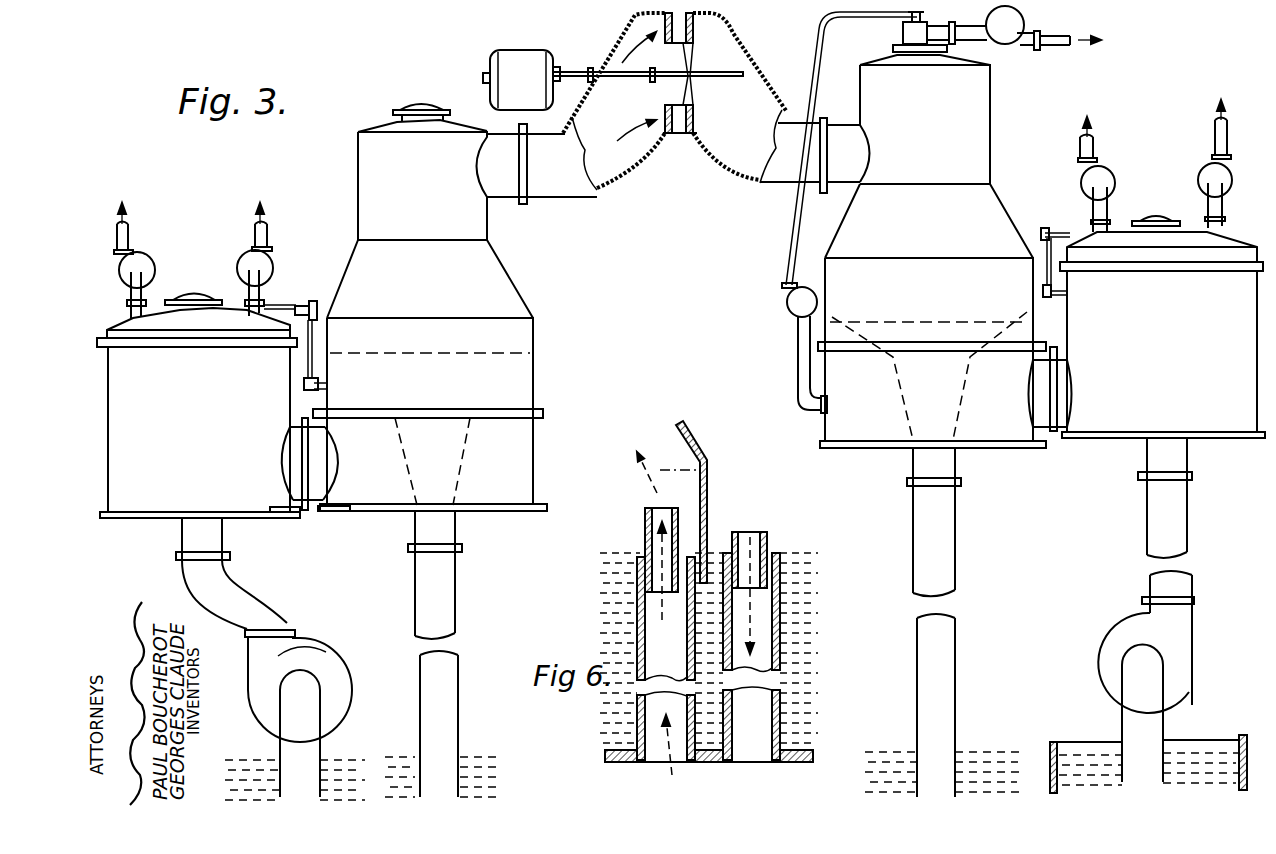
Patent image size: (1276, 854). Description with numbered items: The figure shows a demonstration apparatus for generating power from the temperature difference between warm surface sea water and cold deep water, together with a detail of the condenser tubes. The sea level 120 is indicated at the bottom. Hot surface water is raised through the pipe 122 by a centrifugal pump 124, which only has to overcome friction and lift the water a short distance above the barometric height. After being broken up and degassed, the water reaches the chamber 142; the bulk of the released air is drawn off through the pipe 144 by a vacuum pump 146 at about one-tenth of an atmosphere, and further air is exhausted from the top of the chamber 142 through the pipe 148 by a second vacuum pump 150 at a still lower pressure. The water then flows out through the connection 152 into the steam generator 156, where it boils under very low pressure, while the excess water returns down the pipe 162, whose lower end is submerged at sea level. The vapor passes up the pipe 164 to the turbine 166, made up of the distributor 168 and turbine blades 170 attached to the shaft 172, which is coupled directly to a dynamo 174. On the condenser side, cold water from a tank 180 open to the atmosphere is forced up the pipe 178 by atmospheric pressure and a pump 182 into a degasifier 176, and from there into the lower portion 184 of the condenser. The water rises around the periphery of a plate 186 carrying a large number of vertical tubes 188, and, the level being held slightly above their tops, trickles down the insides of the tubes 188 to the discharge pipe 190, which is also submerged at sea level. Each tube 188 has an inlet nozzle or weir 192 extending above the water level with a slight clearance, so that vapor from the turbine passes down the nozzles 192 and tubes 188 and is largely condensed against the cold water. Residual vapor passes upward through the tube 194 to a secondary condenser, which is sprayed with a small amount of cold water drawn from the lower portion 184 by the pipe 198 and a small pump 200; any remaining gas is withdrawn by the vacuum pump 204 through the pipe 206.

In FIG. 3, the sea level 120 is at (247, 762).
In FIG. 3, the pipe 122 is at (314, 745).
In FIG. 3, the centrifugal pump 124 is at (260, 668).
In FIG. 3, the chamber 142 is at (198, 462).
In FIG. 3, the pipe 144 is at (129, 311).
In FIG. 3, the vacuum pump 146 is at (127, 231).
In FIG. 3, the pipe 148 is at (264, 303).
In FIG. 3, the vacuum pump 150 is at (266, 266).
In FIG. 3, the connection 152 is at (318, 494).
In FIG. 3, the steam generator 156 is at (430, 307).
In FIG. 3, the pipe 162 is at (449, 603).
In FIG. 3, the pipe 164 is at (506, 186).
In FIG. 3, the turbine 166 is at (681, 86).
In FIG. 3, the distributor 168 is at (675, 137).
In FIG. 3, the turbine blades 170 is at (697, 127).
In FIG. 3, the shaft 172 is at (711, 75).
In FIG. 3, the dynamo 174 is at (532, 62).
In FIG. 3, the degasifier 176 is at (1147, 329).
In FIG. 3, the pipe 178 is at (1135, 725).
In FIG. 3, the tank 180 is at (1242, 737).
In FIG. 3, the pump 182 is at (1180, 658).
In FIG. 3, the lower portion of the condenser 184 is at (932, 251).
In FIG. 3, the discharge pipe 190 is at (928, 562).
In FIG. 3, the pipe 198 is at (801, 362).
In FIG. 3, the small pump 200 is at (792, 304).
In FIG. 3, the vacuum pump 204 is at (1018, 25).
In FIG. 3, the pipe 206 is at (978, 33).
In FIG. 6, the plate 186 is at (797, 750).
In FIG. 6, the vertical tubes 188 is at (778, 637).
In FIG. 6, the inlet nozzle or weir 192 is at (738, 530).
In FIG. 6, the tube 194 is at (699, 441).